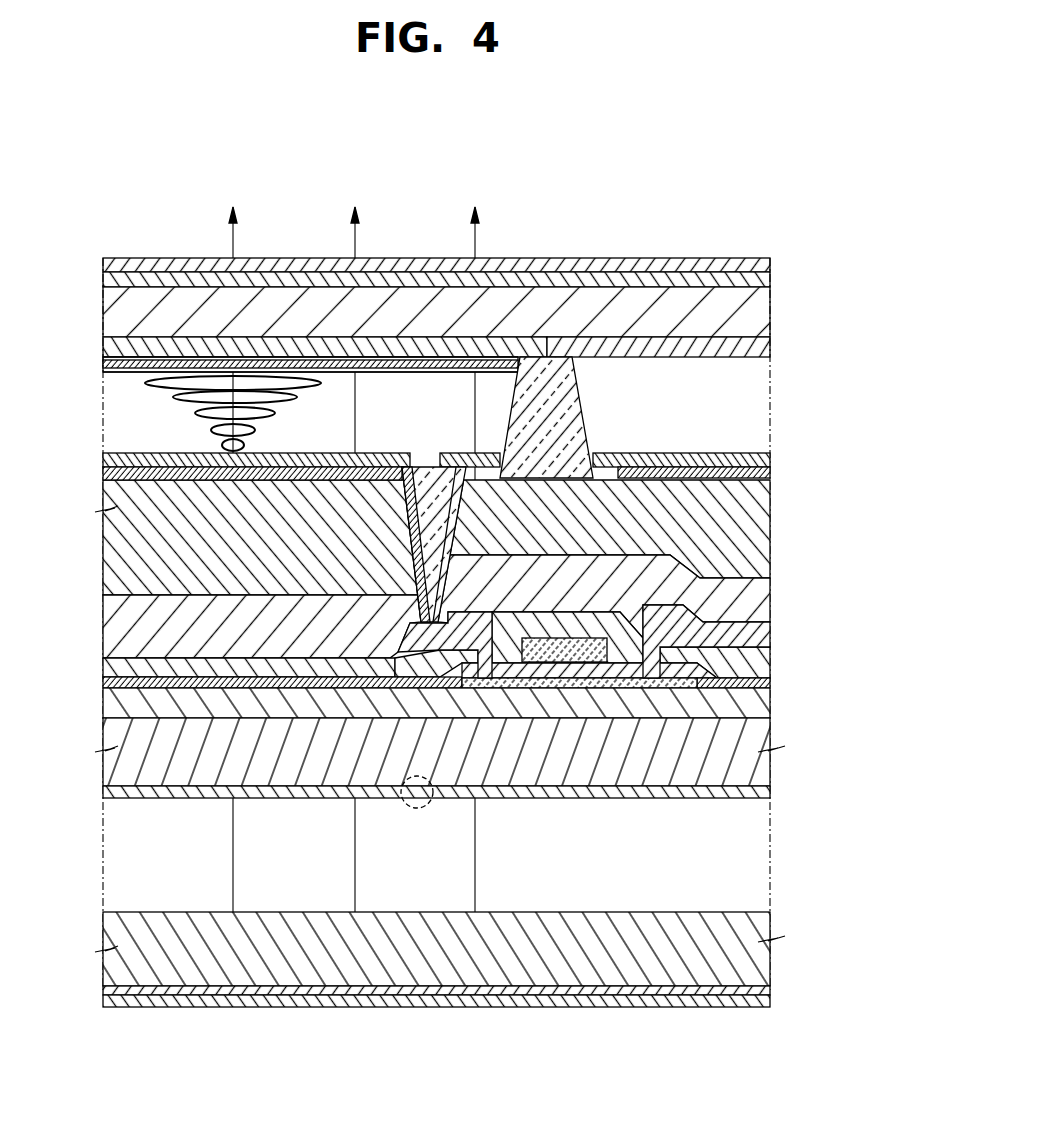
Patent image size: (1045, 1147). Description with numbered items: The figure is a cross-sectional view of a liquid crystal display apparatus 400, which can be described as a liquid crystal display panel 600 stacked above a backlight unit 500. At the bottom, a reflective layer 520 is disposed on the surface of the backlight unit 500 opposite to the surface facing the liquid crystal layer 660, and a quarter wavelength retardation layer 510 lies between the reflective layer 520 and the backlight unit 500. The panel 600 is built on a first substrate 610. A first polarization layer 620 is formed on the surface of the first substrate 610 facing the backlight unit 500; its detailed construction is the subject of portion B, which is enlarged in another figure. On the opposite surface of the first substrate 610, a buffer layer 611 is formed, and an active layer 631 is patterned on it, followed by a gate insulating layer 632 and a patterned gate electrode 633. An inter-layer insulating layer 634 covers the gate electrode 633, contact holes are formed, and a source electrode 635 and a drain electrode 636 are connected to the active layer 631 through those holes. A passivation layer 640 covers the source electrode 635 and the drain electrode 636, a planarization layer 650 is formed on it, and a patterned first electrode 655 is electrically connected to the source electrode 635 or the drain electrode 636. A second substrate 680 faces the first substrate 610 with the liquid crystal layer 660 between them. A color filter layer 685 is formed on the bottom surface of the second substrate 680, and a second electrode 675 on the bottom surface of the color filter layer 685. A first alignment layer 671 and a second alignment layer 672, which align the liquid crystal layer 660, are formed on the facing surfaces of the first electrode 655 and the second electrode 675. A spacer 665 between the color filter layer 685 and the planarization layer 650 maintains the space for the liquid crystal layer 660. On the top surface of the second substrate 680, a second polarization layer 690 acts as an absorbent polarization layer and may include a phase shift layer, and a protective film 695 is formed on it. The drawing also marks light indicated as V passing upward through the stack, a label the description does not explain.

The liquid crystal display apparatus 400 is at (568, 158).
The liquid crystal display panel 600 is at (731, 213).
The protective film 695 is at (770, 265).
The second polarization layer 690 is at (770, 283).
The second substrate 680 is at (760, 318).
The second electrode 675 is at (407, 356).
The color filter layer 685 is at (503, 354).
The second alignment layer 672 is at (103, 363).
The liquid crystal layer 660 is at (130, 415).
The spacer 665 is at (572, 412).
The first alignment layer 671 is at (103, 457).
The first electrode 655 is at (103, 475).
The planarization layer 650 is at (758, 514).
The passivation layer 640 is at (770, 583).
The inter-layer insulating layer 634 is at (770, 655).
The gate insulating layer 632 is at (770, 682).
The gate electrode 633 is at (548, 680).
The active layer 631 is at (592, 686).
The drain electrode 636 is at (480, 660).
The source electrode 635 is at (645, 670).
The buffer layer 611 is at (765, 705).
The first substrate 610 is at (770, 748).
The first polarization layer 620 is at (770, 792).
The backlight unit 500 is at (770, 940).
The quarter wavelength retardation layer 510 is at (770, 990).
The reflective layer 520 is at (770, 1000).
The visible light V is at (233, 855).
The portion B is at (417, 808).